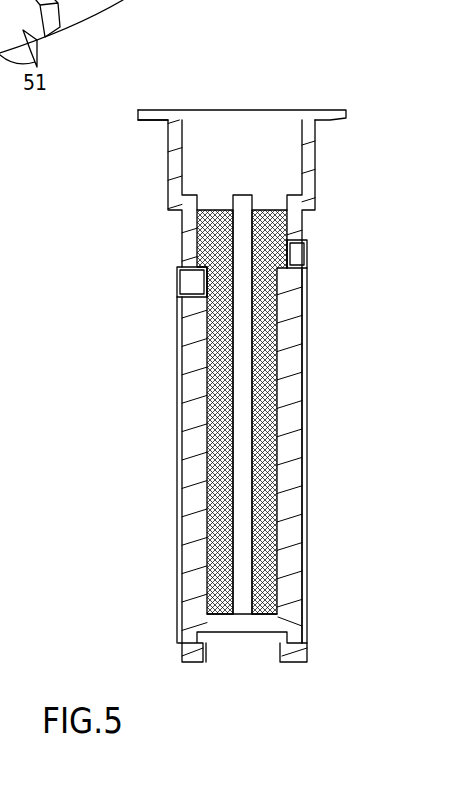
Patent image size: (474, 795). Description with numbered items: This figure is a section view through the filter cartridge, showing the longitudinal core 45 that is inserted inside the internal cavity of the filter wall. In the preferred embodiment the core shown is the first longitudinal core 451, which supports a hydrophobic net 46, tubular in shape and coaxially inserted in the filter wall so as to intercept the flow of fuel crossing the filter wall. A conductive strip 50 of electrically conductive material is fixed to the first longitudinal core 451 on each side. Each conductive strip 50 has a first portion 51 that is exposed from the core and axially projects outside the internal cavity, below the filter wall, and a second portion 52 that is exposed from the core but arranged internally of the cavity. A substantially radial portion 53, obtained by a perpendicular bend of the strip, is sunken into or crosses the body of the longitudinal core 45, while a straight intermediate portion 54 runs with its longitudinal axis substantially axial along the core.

The longitudinal core 45 is at (104, 216).
The first longitudinal core 451 is at (310, 138).
The hydrophobic net 46 is at (215, 395).
The conductive strip 50 is at (174, 366).
The first portion 51 is at (185, 665).
The second portion 52 is at (207, 293).
The radial portion 53 is at (187, 267).
The intermediate portion 54 is at (177, 488).